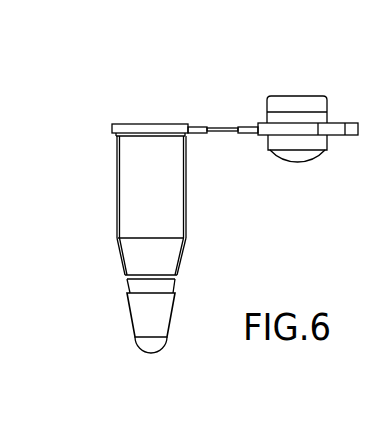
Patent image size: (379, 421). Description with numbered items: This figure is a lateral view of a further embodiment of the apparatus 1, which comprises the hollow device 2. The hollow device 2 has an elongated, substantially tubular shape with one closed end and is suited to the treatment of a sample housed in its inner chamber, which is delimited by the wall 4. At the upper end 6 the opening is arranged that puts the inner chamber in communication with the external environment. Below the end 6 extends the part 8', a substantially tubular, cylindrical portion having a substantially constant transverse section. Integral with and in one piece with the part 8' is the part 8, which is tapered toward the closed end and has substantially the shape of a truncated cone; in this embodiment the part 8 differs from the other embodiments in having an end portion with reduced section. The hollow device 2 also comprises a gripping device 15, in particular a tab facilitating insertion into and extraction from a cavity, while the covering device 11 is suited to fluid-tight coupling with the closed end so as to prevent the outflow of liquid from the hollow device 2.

The apparatus 1 is at (138, 205).
The end 6 is at (102, 128).
The hollow device 2 is at (97, 191).
The part 8' is at (216, 194).
The wall 4 is at (170, 212).
The part 8 is at (116, 295).
The gripping device 15 is at (163, 322).
The covering device 11 is at (122, 324).